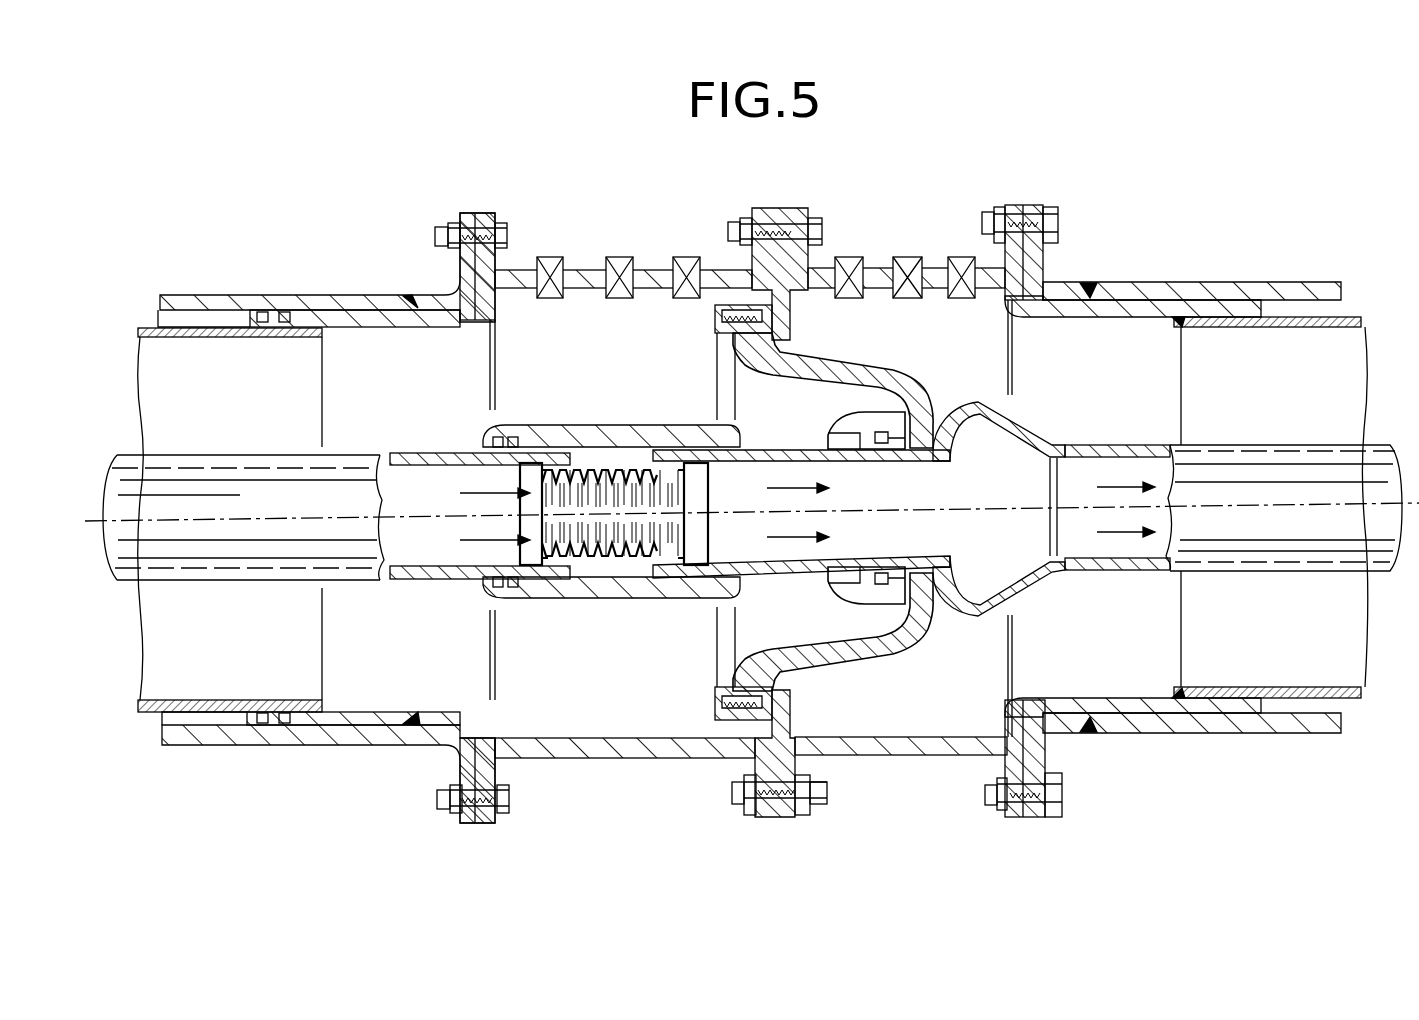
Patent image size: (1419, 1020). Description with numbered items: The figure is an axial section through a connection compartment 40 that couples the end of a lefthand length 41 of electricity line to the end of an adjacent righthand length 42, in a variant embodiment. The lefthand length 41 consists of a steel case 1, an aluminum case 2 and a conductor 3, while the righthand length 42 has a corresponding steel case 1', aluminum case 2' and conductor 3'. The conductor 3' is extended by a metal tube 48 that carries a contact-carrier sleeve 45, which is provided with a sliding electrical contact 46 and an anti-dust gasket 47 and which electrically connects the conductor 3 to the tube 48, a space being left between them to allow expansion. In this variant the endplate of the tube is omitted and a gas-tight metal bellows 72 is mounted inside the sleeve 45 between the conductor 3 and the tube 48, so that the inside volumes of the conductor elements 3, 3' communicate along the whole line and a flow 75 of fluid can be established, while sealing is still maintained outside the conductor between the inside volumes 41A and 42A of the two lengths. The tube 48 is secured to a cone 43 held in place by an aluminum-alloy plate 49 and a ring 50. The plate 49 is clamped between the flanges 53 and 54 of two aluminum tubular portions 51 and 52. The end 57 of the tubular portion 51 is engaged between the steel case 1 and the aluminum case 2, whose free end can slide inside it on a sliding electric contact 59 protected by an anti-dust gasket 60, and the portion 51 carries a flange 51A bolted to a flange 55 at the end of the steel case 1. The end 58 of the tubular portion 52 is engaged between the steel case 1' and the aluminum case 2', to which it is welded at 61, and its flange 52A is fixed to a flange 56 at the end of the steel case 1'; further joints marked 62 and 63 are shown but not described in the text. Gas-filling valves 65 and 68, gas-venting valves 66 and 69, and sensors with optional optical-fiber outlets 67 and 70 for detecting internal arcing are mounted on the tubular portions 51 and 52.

The steel case 1 is at (326, 518).
The steel case 1' is at (1192, 482).
The aluminum case 2 is at (230, 520).
The aluminum case 2' is at (1271, 507).
The conductor 3 is at (336, 548).
The conductor 3' is at (1233, 542).
The connection compartment 40 is at (822, 195).
The lefthand length 41 is at (340, 268).
The inside volume 41A is at (617, 370).
The righthand length 42 is at (1180, 248).
The inside volume 42A is at (1138, 417).
The cone 43 is at (862, 370).
The contact-carrier sleeve 45 is at (590, 435).
The sliding electrical contact 46 is at (520, 600).
The anti-dust gasket 47 is at (492, 592).
The metal tube 48 is at (770, 580).
The plate 49 is at (782, 714).
The ring 50 is at (716, 692).
The tubular portion 51 is at (600, 760).
The flange 51A is at (478, 228).
The tubular portion 52 is at (890, 757).
The flange 52A is at (1010, 212).
The flange 53 is at (758, 816).
The flange 54 is at (805, 816).
The flange 55 is at (470, 275).
The flange 56 is at (1035, 270).
The end 57 is at (440, 327).
The end 58 is at (1022, 320).
The sliding electric contact 59 is at (262, 325).
The anti-dust gasket 60 is at (282, 325).
The weld 61 is at (1172, 322).
The weld 62 is at (410, 312).
The weld 63 is at (1085, 302).
The gas-filling valve 65 is at (550, 265).
The gas-venting valve 66 is at (619, 265).
The optical fiber outlet 67 is at (686, 265).
The gas-filling valve 68 is at (961, 265).
The gas-venting valve 69 is at (906, 265).
The optical fiber outlet 70 is at (848, 265).
The gas-tight metal bellows 72 is at (615, 562).
The flow of fluid 75 is at (455, 540).